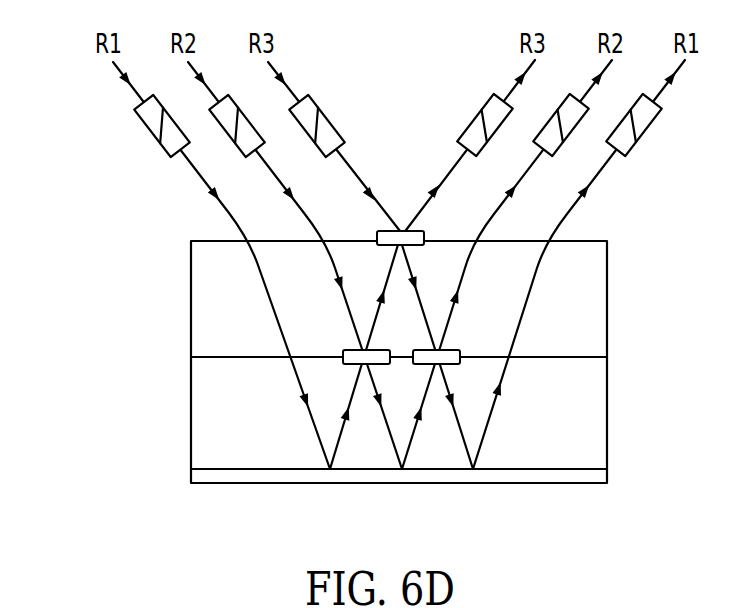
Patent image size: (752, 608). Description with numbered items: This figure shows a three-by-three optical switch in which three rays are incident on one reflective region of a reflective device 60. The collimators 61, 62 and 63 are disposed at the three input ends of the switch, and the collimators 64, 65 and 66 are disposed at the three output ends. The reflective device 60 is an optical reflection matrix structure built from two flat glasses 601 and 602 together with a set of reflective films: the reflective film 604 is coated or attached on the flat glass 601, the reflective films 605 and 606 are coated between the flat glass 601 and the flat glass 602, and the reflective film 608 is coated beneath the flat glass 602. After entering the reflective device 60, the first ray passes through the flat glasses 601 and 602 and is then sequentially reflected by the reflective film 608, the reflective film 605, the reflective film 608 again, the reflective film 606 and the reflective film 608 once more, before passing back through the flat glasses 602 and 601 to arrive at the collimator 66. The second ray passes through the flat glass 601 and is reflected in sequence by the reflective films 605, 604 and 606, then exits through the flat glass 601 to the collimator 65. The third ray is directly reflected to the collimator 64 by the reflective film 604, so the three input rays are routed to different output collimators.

The reflective device 60 is at (324, 336).
The flat glass 601 is at (197, 277).
The flat glass 602 is at (197, 383).
The reflective film 604 is at (377, 233).
The reflective film 605 is at (343, 352).
The reflective film 606 is at (422, 363).
The reflective film 608 is at (197, 474).
The collimator 61 is at (151, 122).
The collimator 62 is at (232, 99).
The collimator 63 is at (312, 99).
The collimator 64 is at (488, 100).
The collimator 65 is at (564, 100).
The collimator 66 is at (655, 117).